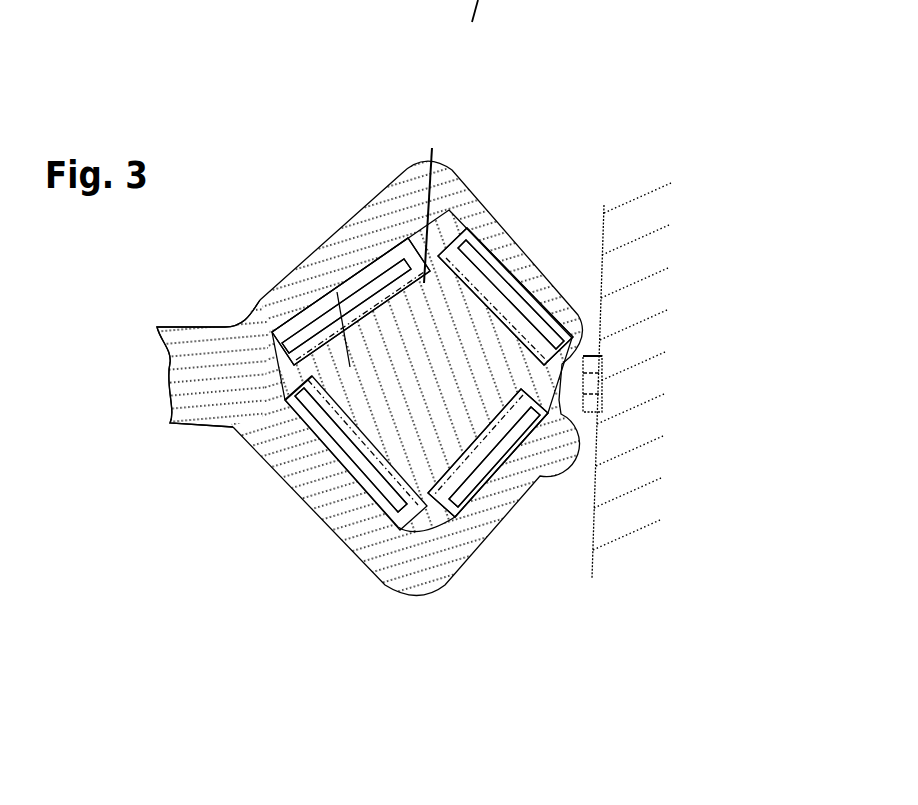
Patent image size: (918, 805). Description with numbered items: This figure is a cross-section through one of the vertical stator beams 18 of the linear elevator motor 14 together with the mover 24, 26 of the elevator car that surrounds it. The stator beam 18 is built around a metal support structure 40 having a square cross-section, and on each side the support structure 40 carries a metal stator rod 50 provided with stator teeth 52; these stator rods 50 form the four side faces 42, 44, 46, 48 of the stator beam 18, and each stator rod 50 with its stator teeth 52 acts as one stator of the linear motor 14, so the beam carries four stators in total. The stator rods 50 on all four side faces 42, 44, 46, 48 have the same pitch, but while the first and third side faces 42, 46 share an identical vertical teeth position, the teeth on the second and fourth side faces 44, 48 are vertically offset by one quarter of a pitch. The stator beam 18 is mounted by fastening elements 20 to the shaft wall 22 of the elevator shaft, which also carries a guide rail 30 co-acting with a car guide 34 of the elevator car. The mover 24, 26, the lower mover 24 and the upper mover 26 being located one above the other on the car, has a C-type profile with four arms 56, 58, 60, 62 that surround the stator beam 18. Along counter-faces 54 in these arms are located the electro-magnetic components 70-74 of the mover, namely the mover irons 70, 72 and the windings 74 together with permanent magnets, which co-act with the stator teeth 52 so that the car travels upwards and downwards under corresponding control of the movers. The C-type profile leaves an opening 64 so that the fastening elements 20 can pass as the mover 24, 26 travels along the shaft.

The linear elevator motor 14 is at (198, 548).
The stator beam 18 is at (422, 333).
The fastening elements 20 is at (573, 383).
The shaft wall 22 is at (634, 238).
The lower mover 24 is at (163, 314).
The upper mover 26 is at (272, 0).
The guide rail 30 is at (478, 0).
The car guide 34 is at (446, 11).
The metal support structure 40 is at (432, 189).
The first side face 42 is at (317, 313).
The second side face 44 is at (447, 226).
The third side face 46 is at (430, 525).
The fourth side face 48 is at (348, 530).
The stator rod 50 is at (503, 310).
The stator teeth 52 is at (386, 247).
The counter-faces 54 is at (337, 292).
The arm 56 is at (308, 275).
The arm 58 is at (533, 272).
The arm 60 is at (480, 532).
The arm 62 is at (323, 500).
The opening 64 is at (590, 345).
The mover iron 70 is at (493, 263).
The mover iron 72 is at (337, 273).
The winding 74 is at (305, 454).
The electro-magnetic components 70-74 is at (520, 455).